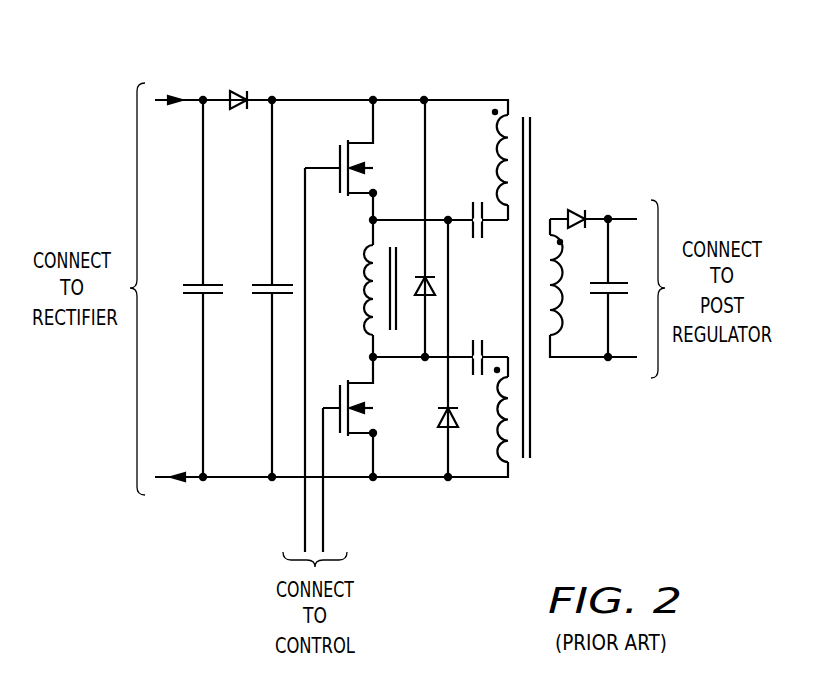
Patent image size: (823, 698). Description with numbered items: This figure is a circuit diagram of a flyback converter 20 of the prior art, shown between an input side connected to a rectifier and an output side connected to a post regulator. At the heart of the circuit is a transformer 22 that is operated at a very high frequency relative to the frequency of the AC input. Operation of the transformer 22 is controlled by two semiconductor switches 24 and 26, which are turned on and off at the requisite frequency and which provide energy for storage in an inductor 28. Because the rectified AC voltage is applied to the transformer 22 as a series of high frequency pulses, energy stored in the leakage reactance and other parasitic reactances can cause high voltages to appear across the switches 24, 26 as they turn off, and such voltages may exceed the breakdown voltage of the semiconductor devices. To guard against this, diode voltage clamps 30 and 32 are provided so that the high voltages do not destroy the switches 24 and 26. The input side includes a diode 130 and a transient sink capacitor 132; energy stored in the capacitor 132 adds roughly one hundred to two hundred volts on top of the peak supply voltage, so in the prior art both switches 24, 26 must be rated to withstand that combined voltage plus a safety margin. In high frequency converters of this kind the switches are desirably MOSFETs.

The flyback converter 20 is at (553, 73).
The transformer 22 is at (538, 216).
The semiconductor switch 24 is at (362, 158).
The semiconductor switch 26 is at (370, 396).
The inductor 28 is at (363, 282).
The diode voltage clamp 30 is at (463, 423).
The diode voltage clamp 32 is at (413, 283).
The input diode 130 is at (238, 90).
The transient sink capacitor 132 is at (268, 282).